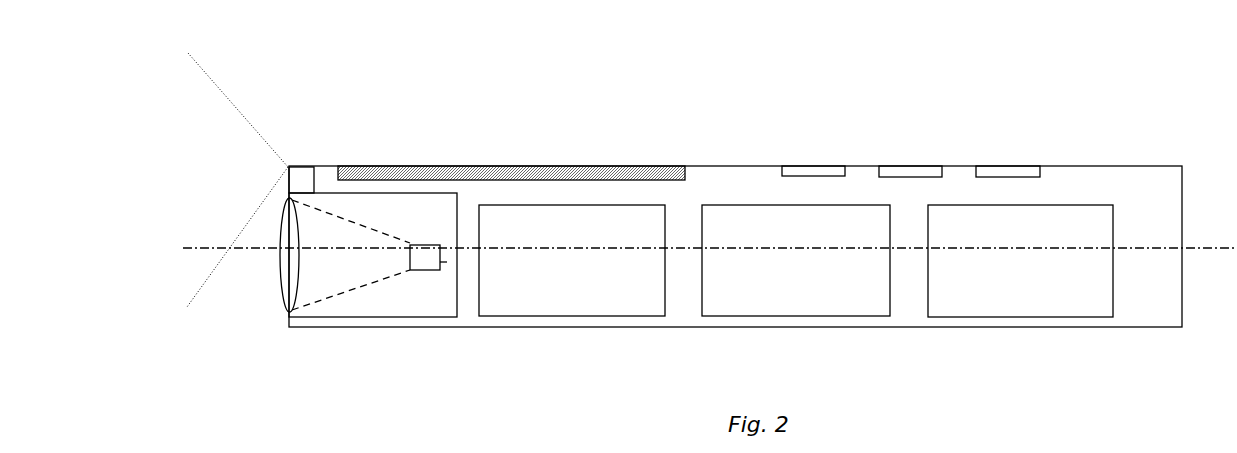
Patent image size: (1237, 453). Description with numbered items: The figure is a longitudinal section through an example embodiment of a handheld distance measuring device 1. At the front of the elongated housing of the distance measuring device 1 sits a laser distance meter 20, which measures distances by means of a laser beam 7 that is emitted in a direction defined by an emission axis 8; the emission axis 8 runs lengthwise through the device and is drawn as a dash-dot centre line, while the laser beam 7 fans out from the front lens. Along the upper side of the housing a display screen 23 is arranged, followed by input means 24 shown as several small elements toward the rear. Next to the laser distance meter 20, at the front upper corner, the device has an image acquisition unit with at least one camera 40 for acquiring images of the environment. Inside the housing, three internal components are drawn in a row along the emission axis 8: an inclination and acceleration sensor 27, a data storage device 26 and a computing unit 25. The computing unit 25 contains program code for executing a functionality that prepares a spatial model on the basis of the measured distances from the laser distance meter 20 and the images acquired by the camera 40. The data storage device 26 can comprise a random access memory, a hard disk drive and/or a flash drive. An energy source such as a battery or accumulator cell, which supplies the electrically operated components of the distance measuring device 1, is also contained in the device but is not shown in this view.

The handheld distance measuring device 1 is at (390, 340).
The laser beam 7 is at (225, 248).
The emission axis 8 is at (1178, 248).
The laser distance meter 20 is at (270, 300).
The display screen 23 is at (553, 175).
The input means 24 is at (905, 170).
The computing unit 25 is at (1018, 297).
The data storage device 26 is at (770, 297).
The inclination and acceleration sensor 27 is at (556, 297).
The camera 40 is at (298, 184).